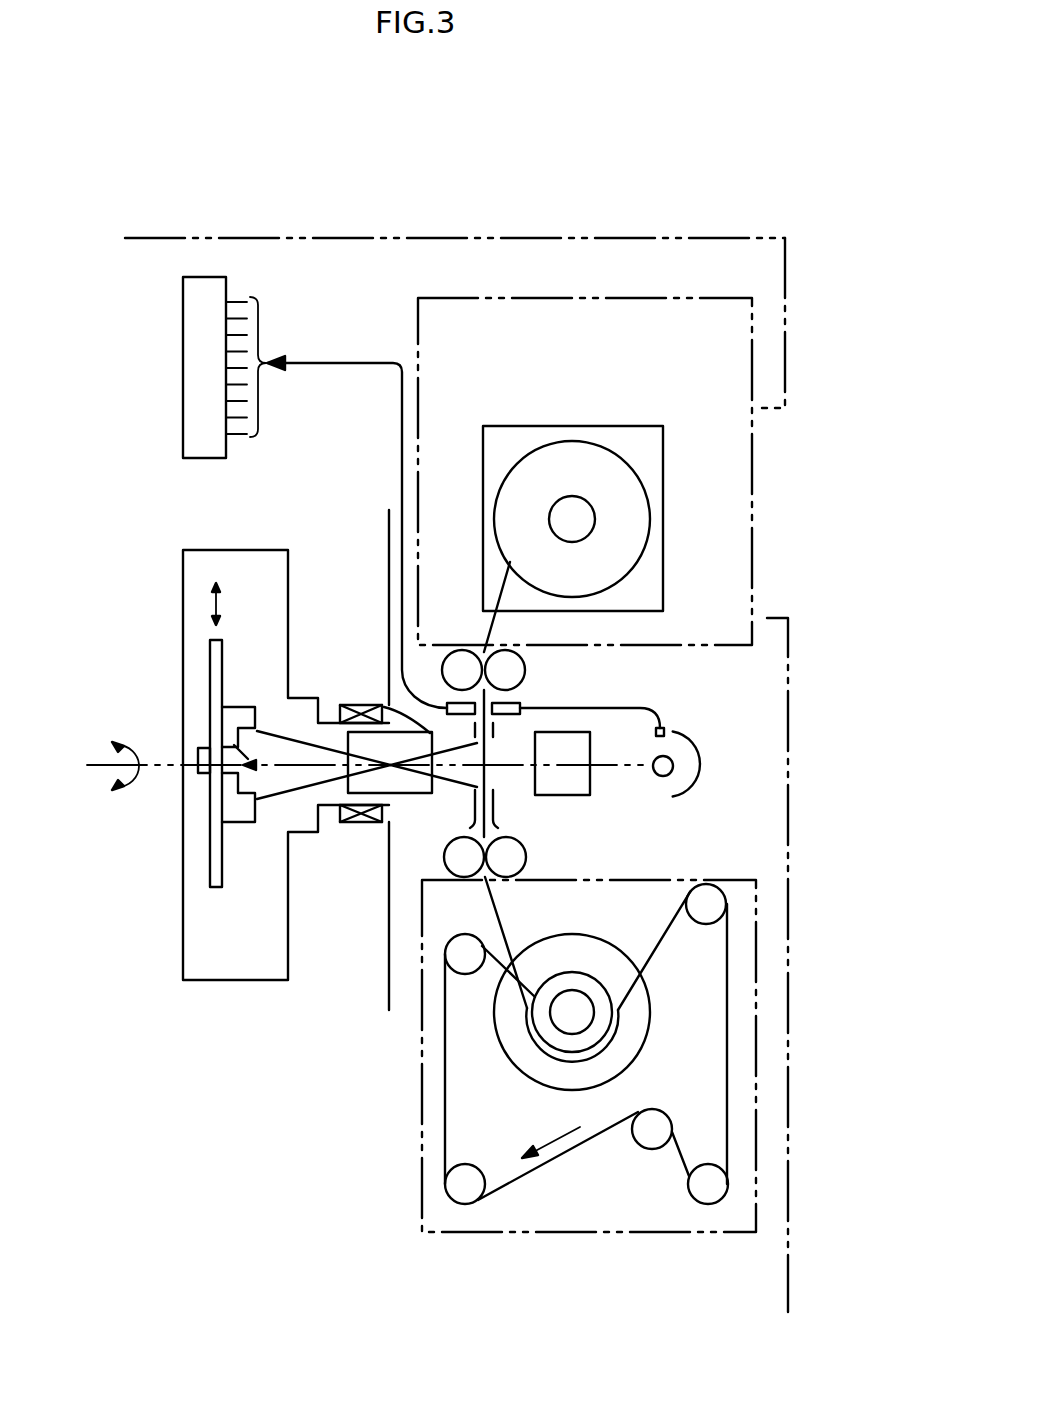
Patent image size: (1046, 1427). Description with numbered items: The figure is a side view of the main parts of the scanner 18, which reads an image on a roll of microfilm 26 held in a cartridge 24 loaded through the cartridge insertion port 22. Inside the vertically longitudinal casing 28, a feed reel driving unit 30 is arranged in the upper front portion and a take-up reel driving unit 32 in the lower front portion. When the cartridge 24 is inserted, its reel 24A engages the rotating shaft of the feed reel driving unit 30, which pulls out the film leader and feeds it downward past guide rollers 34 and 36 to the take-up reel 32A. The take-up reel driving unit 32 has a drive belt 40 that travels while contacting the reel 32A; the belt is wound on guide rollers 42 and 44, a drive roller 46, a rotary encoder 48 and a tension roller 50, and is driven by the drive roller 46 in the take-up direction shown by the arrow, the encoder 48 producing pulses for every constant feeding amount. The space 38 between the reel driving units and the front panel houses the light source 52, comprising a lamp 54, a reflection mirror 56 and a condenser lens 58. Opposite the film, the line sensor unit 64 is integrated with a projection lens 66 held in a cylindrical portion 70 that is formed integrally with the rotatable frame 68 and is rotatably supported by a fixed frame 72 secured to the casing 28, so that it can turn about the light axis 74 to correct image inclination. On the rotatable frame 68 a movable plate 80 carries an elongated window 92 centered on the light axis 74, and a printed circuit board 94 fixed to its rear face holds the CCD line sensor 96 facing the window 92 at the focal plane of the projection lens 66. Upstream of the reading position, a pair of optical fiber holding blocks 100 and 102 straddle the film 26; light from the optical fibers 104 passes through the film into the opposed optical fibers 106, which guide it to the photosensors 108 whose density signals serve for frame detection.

The scanner 18 is at (466, 240).
The cartridge insertion port 22 is at (775, 495).
The cartridge 24 is at (620, 426).
The reel 24A is at (647, 494).
The microfilm 26 is at (494, 905).
The casing 28 is at (355, 236).
The feed reel driving unit 30 is at (787, 285).
The take-up reel driving unit 32 is at (758, 1165).
The take-up reel 32A is at (673, 1042).
The guide rollers 34 is at (462, 650).
The guide rollers 36 is at (444, 860).
The space 38 is at (747, 728).
The drive belt 40 is at (728, 1075).
The guide roller 42 is at (465, 974).
The guide roller 44 is at (726, 905).
The drive roller 46 is at (708, 1204).
The rotary encoder 48 is at (648, 1149).
The tension roller 50 is at (465, 1204).
The light source 52 is at (718, 767).
The lamp 54 is at (688, 782).
The reflection mirror 56 is at (670, 772).
The condenser lens 58 is at (565, 796).
The line sensor unit 64 is at (172, 600).
The projection lens 66 is at (384, 705).
The rotatable frame 68 is at (288, 912).
The cylindrical portion 70 is at (384, 808).
The fixed frame 72 is at (388, 532).
The light axis 74 is at (613, 765).
The movable plate 80 is at (243, 823).
The window 92 is at (240, 747).
The printed circuit board 94 is at (210, 660).
The CCD line sensor 96 is at (203, 777).
The optical fiber holding block 100 is at (520, 706).
The optical fiber holding block 102 is at (445, 692).
The optical fibers 104 is at (655, 708).
The optical fibers 106 is at (355, 363).
The photosensors 108 is at (203, 460).